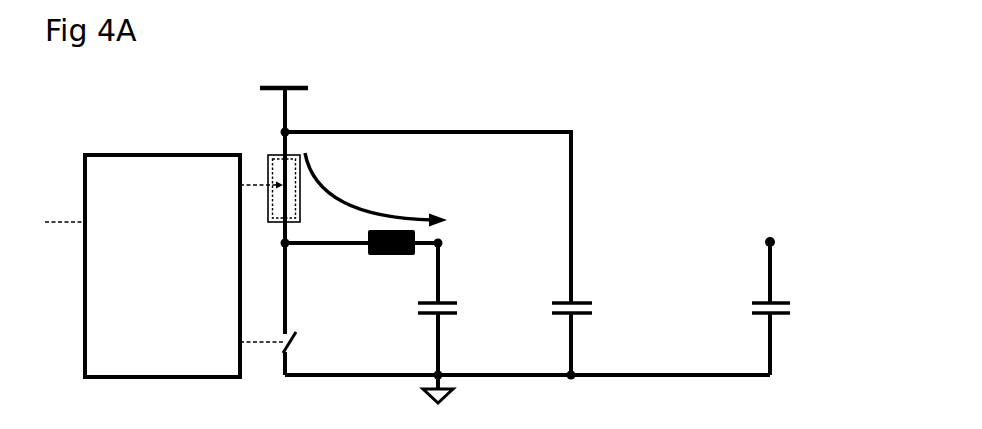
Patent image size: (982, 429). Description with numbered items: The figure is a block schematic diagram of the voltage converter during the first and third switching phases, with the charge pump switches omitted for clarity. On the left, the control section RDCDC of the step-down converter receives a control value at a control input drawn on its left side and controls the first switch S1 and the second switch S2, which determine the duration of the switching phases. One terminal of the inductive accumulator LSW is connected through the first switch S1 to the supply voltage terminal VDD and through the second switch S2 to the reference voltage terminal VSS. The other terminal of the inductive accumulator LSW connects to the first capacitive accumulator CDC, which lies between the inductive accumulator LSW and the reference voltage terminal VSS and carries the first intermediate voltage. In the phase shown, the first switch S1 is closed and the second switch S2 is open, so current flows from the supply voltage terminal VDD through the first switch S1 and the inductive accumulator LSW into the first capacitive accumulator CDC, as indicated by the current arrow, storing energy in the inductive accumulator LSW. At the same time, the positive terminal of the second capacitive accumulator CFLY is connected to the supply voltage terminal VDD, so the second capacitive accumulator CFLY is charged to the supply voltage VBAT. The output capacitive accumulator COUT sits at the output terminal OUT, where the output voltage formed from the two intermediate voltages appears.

The control section RDCDC is at (164, 266).
The supply voltage terminal VDD is at (288, 84).
The supply voltage VBAT is at (428, 236).
The first switch S1 is at (302, 182).
The second switch S2 is at (296, 332).
The inductive accumulator LSW is at (387, 257).
The first capacitive accumulator CDC is at (427, 313).
The second capacitive accumulator CFLY is at (590, 303).
The output capacitive accumulator COUT is at (755, 315).
The output terminal OUT is at (775, 237).
The reference voltage terminal VSS is at (453, 392).